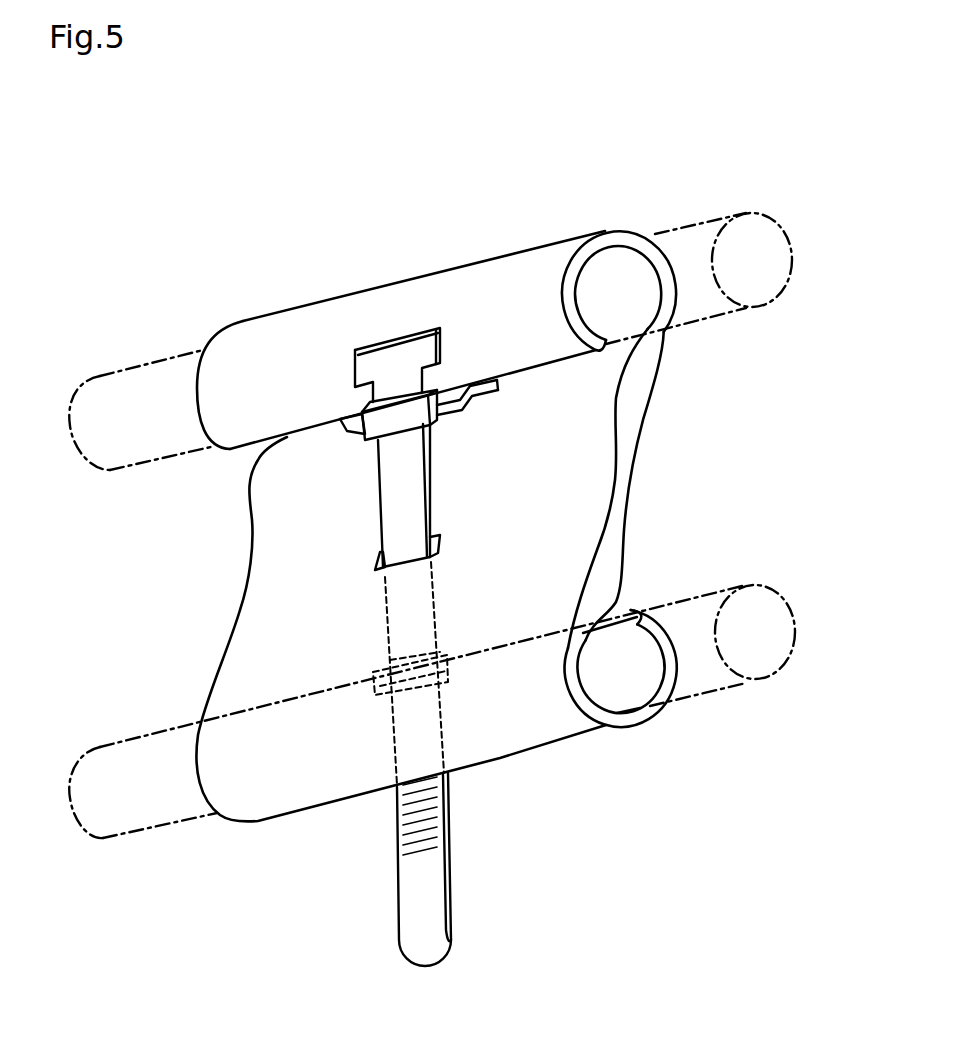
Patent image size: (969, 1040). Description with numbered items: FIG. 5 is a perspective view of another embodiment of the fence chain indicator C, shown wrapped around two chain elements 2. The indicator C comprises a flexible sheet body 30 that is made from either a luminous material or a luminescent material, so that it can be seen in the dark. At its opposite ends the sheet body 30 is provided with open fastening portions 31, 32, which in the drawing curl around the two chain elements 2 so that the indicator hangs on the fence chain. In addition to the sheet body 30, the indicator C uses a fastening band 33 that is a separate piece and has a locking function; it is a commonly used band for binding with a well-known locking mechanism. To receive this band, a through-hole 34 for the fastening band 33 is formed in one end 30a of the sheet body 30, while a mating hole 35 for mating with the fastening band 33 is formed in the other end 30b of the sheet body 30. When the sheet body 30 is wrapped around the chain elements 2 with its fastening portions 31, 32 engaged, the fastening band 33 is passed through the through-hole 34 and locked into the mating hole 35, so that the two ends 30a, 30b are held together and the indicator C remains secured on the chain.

The tube (pipe) 2 is at (700, 228).
The open fastening portion 31 is at (508, 293).
The open fastening portion 32 is at (513, 758).
The flexible sheet body 30 is at (632, 493).
The one end of sheet body 30a is at (460, 404).
The other end of sheet body 30b is at (620, 608).
The through-hole 34 is at (365, 405).
The mating hole 35 is at (375, 557).
The fastening band 33 is at (417, 882).
The fence chain indicator C is at (327, 251).